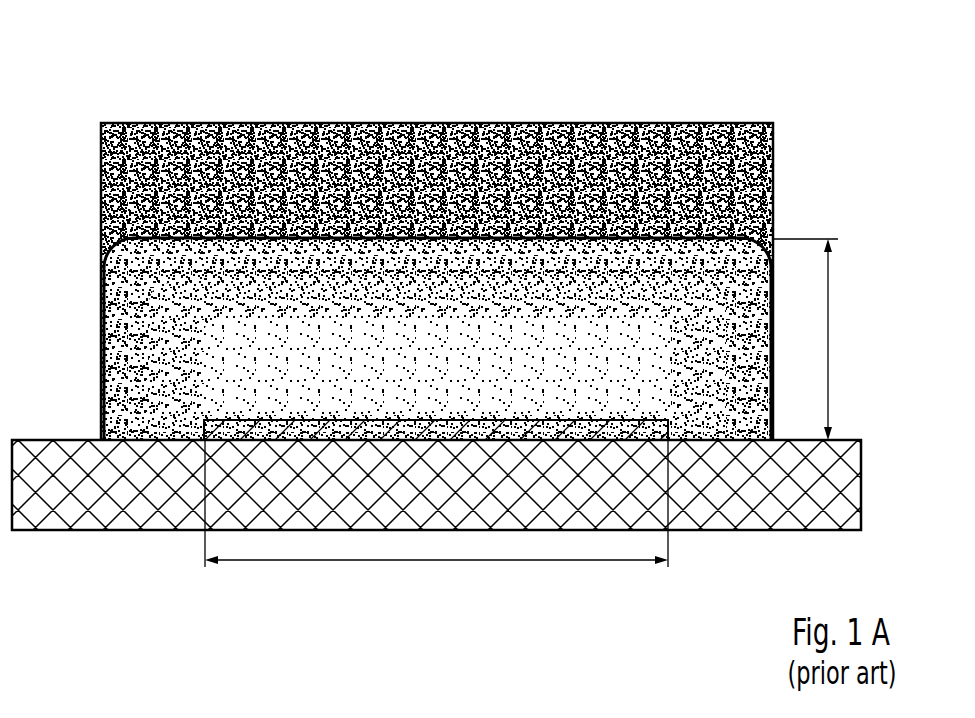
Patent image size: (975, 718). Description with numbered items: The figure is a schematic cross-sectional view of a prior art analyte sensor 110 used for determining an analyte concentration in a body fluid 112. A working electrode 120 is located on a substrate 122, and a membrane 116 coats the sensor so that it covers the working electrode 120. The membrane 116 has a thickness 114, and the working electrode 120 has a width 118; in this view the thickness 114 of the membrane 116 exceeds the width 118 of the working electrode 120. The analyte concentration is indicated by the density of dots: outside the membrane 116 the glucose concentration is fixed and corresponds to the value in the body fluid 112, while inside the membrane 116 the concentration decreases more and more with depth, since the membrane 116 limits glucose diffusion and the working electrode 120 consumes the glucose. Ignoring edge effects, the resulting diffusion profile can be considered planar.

The prior art analyte sensor 110 is at (826, 152).
The body fluid 112 is at (430, 158).
The thickness 114 is at (829, 339).
The membrane 116 is at (667, 230).
The width 118 is at (437, 561).
The working electrode 120 is at (196, 425).
The substrate 122 is at (850, 488).